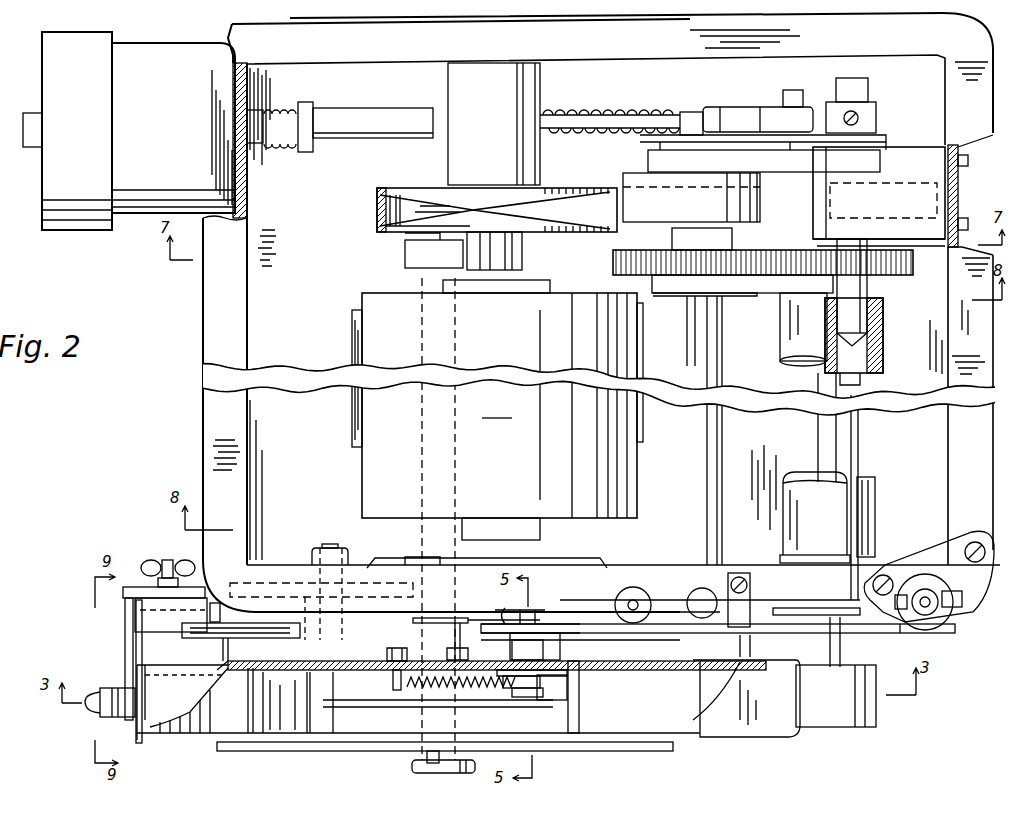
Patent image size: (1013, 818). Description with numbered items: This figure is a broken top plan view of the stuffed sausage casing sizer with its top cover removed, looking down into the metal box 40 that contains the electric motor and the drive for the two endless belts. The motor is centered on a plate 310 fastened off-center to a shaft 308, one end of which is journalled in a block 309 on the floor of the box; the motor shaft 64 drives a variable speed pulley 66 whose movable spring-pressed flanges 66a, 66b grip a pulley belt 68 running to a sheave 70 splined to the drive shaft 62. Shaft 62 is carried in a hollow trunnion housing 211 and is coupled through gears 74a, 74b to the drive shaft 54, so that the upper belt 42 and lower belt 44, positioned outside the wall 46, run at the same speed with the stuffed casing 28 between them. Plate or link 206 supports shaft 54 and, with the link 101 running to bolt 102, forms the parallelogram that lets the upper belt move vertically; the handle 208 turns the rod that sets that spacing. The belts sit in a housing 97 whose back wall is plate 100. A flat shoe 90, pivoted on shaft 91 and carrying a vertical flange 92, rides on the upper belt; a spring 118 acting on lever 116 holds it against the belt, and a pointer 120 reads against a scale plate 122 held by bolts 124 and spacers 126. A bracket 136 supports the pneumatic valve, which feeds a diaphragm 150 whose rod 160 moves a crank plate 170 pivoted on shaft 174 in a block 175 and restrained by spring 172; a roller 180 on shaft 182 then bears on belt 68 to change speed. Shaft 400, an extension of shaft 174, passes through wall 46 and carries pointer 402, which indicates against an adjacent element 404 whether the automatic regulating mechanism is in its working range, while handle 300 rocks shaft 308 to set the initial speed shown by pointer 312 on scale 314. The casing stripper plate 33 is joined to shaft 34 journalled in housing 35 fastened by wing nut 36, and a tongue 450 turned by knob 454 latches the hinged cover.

The stuffed casing 28 is at (85, 712).
The plate 33 is at (125, 651).
The shaft 34 is at (125, 616).
The housing 35 is at (155, 630).
The stud and wing nut 36 is at (182, 562).
The metal box 40 is at (203, 465).
The upper belt 42 is at (192, 737).
The lower belt 44 is at (856, 727).
The wall 46 is at (676, 568).
The drive shaft 54 is at (722, 452).
The drive shaft 62 is at (818, 376).
The motor shaft 64 is at (497, 263).
The variable speed pulley 66 is at (471, 203).
The pulley flange 66a is at (385, 232).
The pulley flange 66b is at (590, 185).
The pulley belt 68 is at (377, 200).
The sheave 70 is at (810, 190).
The gear 74a is at (760, 293).
The gear 74b is at (808, 255).
The shoe 90 is at (580, 692).
The shaft 91 is at (302, 751).
The vertical flange 92 is at (392, 707).
The housing 97 is at (655, 740).
The plate 100 is at (491, 679).
The link 101 is at (272, 640).
The bolt 102 is at (334, 545).
The lever 116 is at (525, 700).
The spring 118 is at (505, 690).
The pointer 120 is at (570, 637).
The scale plate 122 is at (527, 618).
The bolt 124 is at (520, 622).
The spacer 126 is at (590, 643).
The bracket 136 is at (398, 688).
The diaphragm 150 is at (166, 113).
The rod 160 is at (577, 118).
The crank plate 170 is at (870, 135).
The spring 172 is at (672, 105).
The shaft 174 is at (868, 290).
The block 175 is at (930, 160).
The roller 180 is at (752, 203).
The shaft 182 is at (691, 112).
The link 206 is at (945, 628).
The handle 208 is at (960, 610).
The trunnion housing 211 is at (782, 330).
The handle 300 is at (620, 590).
The shaft 308 is at (418, 537).
The block 309 is at (405, 262).
The plate 310 is at (352, 315).
The pointer 312 is at (413, 623).
The scale 314 is at (462, 617).
The shaft 400 is at (860, 462).
The pointer 402 is at (870, 638).
The stop bar 404 is at (822, 608).
The tongue 450 is at (427, 757).
The knob 454 is at (412, 770).